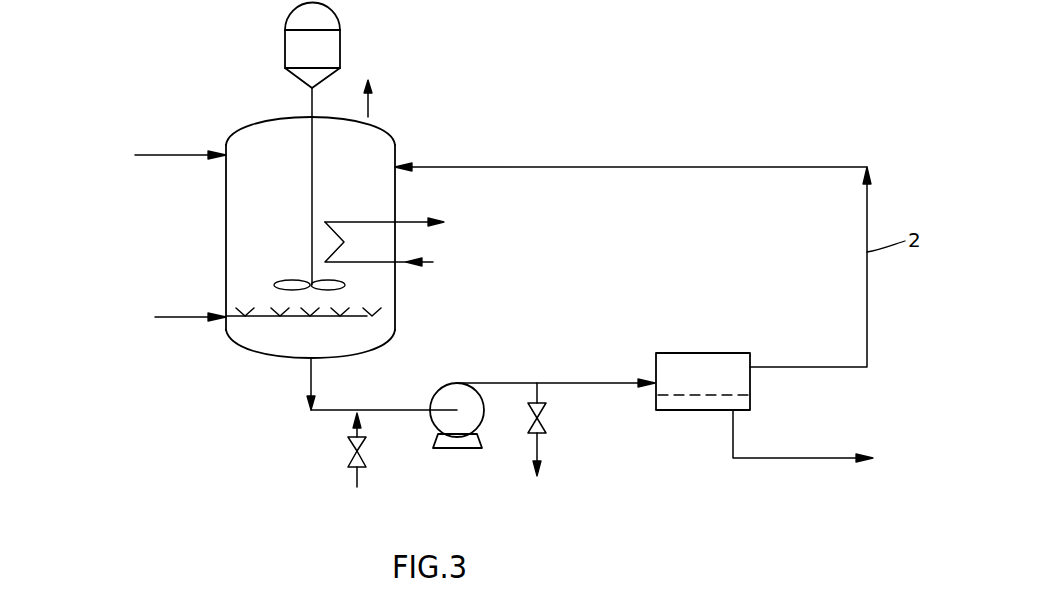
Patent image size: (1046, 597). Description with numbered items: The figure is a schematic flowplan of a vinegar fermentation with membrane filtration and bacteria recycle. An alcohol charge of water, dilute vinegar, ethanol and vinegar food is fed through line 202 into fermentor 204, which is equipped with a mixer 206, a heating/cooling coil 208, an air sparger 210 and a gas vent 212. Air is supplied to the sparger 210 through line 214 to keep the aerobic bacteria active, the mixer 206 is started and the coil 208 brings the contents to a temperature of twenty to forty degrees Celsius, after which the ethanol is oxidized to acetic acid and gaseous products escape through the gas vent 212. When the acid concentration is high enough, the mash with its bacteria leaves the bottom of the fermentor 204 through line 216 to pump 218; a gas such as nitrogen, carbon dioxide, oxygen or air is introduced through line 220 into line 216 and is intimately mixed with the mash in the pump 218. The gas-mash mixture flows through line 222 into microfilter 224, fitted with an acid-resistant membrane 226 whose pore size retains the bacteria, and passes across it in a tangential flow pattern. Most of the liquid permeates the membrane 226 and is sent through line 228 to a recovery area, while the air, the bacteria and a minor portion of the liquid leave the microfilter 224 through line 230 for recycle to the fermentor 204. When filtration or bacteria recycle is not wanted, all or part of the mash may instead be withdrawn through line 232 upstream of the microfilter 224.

The line 202 is at (173, 157).
The fermentor 204 is at (248, 124).
The mixer 206 is at (340, 40).
The heating/cooling coil 208 is at (433, 262).
The air sparger 210 is at (367, 316).
The gas vent 212 is at (370, 110).
The line 214 is at (175, 318).
The line 216 is at (310, 384).
The pump 218 is at (455, 449).
The line 220 is at (355, 477).
The line 222 is at (603, 380).
The microfilter 224 is at (688, 411).
The membrane 226 is at (752, 398).
The line 228 is at (830, 460).
The line 230 is at (658, 165).
The line 232 is at (537, 445).